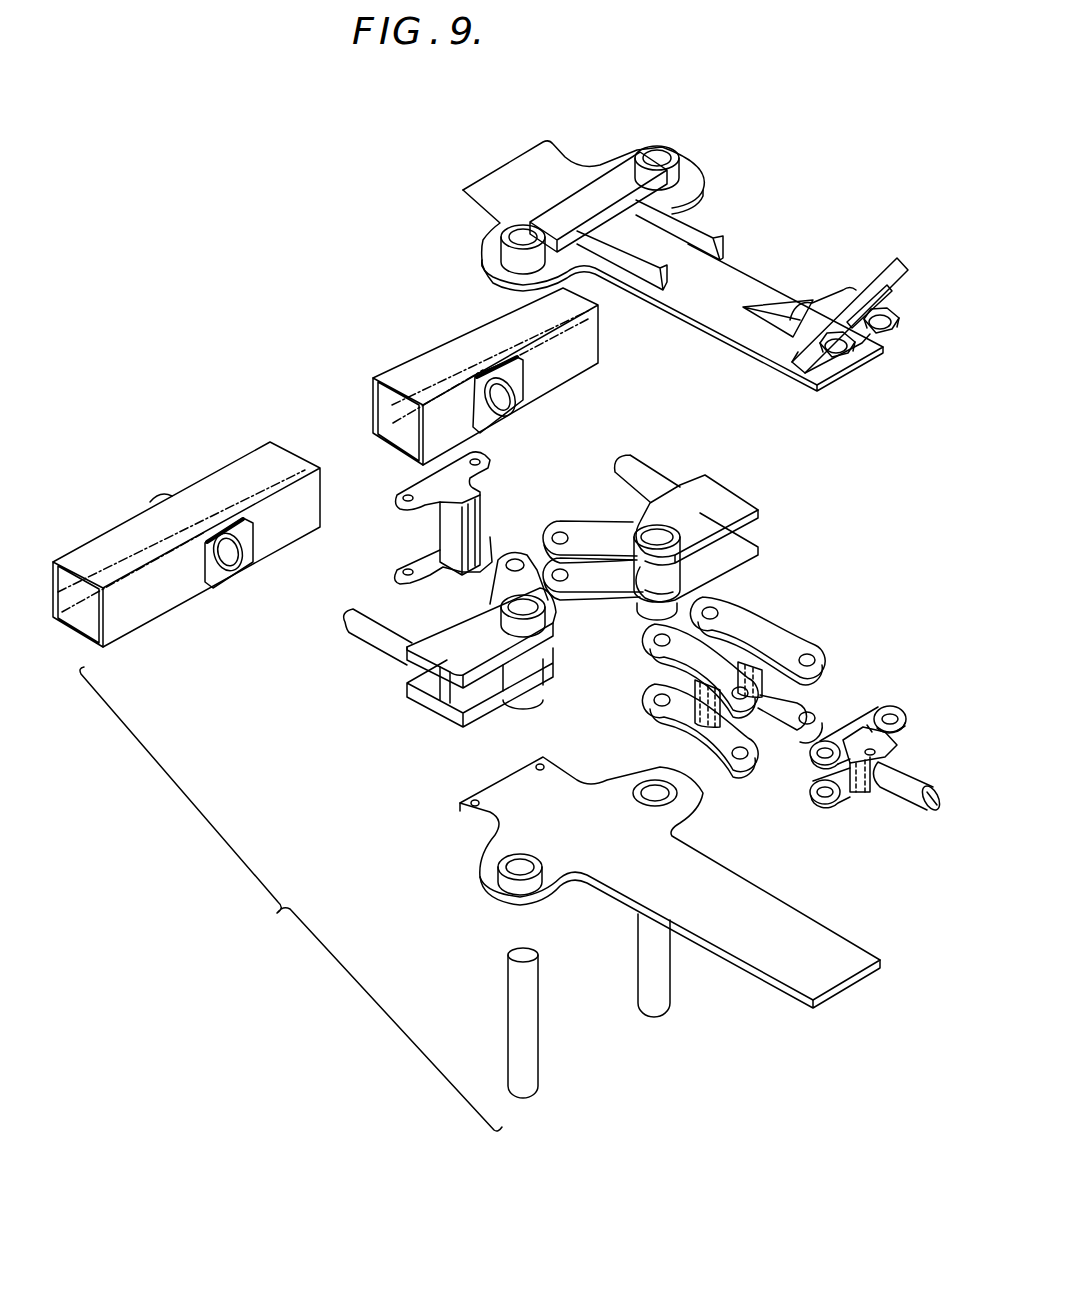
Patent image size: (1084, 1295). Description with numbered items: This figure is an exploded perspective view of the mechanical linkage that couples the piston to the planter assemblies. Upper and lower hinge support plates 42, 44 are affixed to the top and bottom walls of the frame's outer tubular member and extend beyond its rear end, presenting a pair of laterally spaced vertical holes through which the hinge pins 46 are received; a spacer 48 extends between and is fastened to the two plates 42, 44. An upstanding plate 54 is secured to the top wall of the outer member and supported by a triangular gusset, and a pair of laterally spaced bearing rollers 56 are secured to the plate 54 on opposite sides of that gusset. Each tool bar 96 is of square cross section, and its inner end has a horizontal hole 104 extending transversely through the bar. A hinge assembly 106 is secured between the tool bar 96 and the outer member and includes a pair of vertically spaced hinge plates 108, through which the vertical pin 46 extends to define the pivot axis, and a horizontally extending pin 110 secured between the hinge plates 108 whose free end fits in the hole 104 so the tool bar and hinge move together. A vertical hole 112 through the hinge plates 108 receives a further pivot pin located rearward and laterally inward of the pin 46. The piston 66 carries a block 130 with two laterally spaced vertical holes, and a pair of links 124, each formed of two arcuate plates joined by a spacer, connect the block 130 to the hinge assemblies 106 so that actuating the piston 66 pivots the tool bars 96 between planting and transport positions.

The upper hinge support plate 42 is at (702, 185).
The lower hinge support plate 44 is at (500, 818).
The hinge pin 46 is at (655, 1015).
The spacer 48 is at (443, 535).
The upstanding plate 54 is at (882, 268).
The bearing rollers 56 is at (852, 280).
The piston 66 is at (900, 795).
The tool bar 96 is at (410, 372).
The horizontal hole 104 is at (500, 402).
The hinge assembly 106 is at (740, 482).
The hinge plates 108 is at (770, 517).
The horizontally extending pin 110 is at (647, 467).
The vertical hole 112 is at (560, 533).
The link 124 is at (748, 632).
The block 130 is at (872, 720).